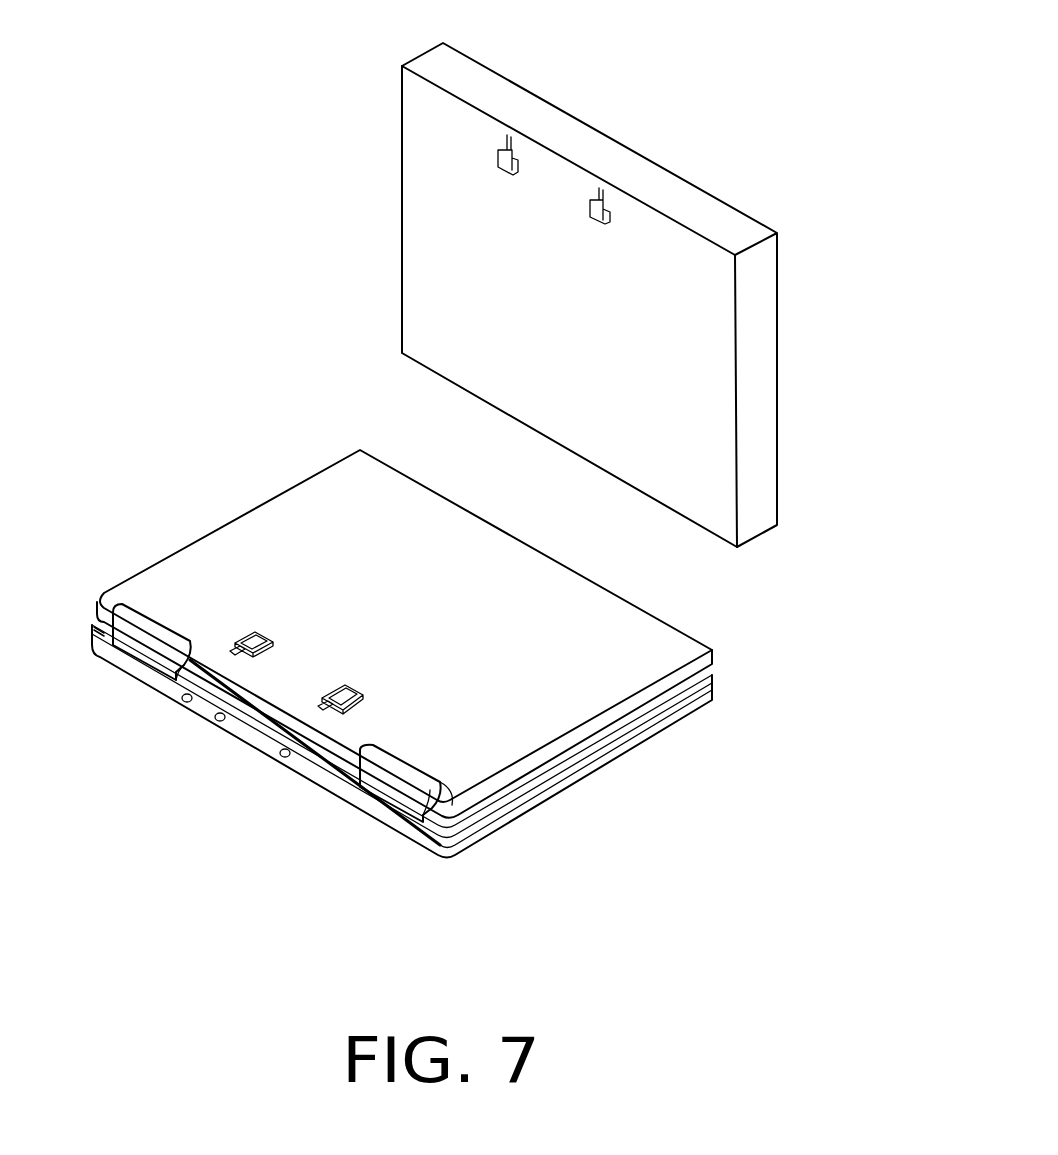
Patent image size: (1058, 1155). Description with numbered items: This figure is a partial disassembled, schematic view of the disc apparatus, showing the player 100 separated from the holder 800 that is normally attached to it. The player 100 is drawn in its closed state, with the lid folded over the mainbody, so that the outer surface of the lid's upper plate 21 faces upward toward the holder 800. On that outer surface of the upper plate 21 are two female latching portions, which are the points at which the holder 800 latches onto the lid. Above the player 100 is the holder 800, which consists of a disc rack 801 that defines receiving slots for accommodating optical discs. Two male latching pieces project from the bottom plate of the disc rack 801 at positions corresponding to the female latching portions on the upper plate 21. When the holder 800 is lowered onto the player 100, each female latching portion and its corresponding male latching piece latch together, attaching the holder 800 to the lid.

The player 100 is at (497, 627).
The upper plate 21 is at (388, 607).
The holder 800 is at (624, 278).
The disc rack 801 is at (723, 227).